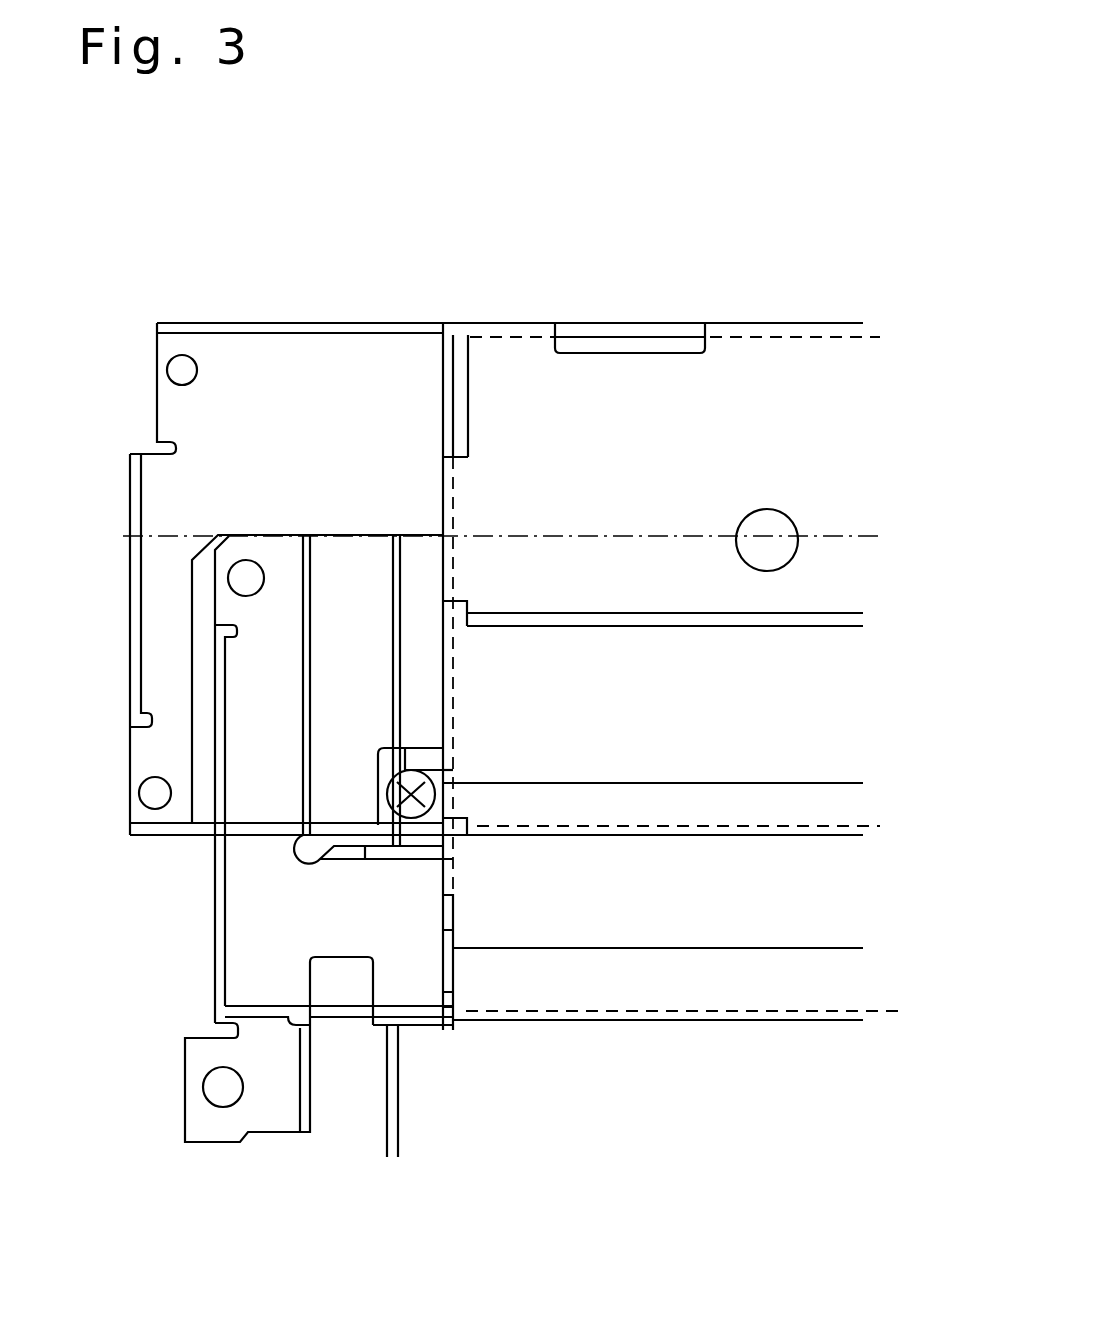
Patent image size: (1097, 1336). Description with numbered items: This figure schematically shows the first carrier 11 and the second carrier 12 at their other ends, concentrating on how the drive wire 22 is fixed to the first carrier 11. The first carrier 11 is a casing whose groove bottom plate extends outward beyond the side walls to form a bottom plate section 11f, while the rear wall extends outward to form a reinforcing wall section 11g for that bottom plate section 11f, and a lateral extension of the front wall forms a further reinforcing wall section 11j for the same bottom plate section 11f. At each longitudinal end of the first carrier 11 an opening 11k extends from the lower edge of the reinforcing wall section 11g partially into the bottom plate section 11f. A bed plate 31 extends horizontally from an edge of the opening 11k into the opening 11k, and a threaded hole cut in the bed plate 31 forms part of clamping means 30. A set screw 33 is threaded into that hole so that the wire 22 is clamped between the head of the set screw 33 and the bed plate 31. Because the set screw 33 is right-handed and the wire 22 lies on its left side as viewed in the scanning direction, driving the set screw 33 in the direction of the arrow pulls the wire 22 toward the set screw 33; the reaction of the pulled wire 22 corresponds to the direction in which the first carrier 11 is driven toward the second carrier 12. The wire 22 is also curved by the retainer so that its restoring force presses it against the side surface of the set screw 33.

The first carrier 11 is at (729, 314).
The bottom plate section 11f is at (357, 352).
The reinforcing wall section 11j is at (208, 325).
The opening 11k is at (205, 652).
The reinforcing wall section 11g is at (160, 827).
The second carrier 12 is at (534, 1030).
The wire 22 is at (393, 640).
The clamping means 30 is at (427, 765).
The bed plate 31 is at (338, 780).
The set screw 33 is at (436, 797).